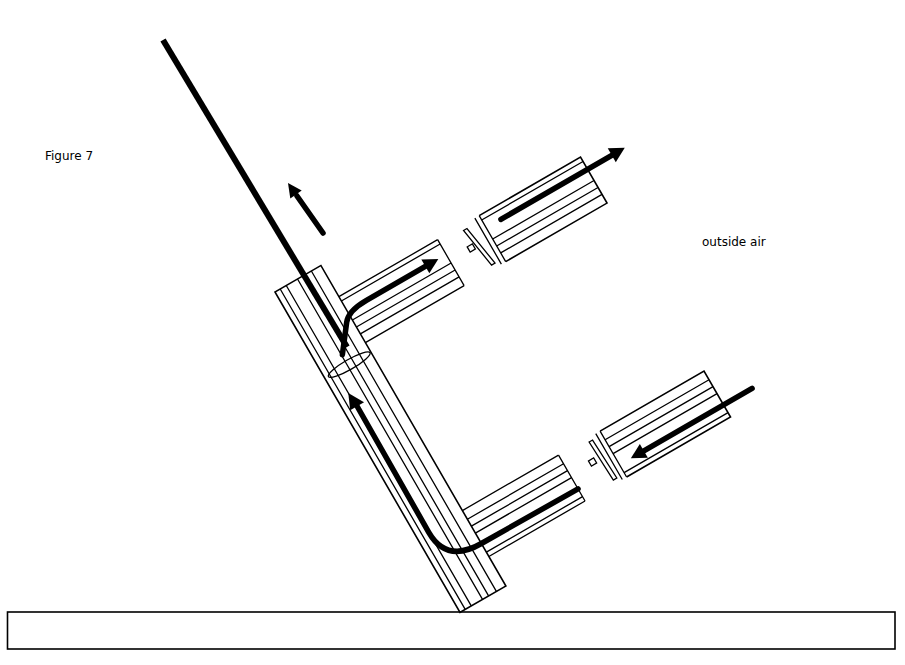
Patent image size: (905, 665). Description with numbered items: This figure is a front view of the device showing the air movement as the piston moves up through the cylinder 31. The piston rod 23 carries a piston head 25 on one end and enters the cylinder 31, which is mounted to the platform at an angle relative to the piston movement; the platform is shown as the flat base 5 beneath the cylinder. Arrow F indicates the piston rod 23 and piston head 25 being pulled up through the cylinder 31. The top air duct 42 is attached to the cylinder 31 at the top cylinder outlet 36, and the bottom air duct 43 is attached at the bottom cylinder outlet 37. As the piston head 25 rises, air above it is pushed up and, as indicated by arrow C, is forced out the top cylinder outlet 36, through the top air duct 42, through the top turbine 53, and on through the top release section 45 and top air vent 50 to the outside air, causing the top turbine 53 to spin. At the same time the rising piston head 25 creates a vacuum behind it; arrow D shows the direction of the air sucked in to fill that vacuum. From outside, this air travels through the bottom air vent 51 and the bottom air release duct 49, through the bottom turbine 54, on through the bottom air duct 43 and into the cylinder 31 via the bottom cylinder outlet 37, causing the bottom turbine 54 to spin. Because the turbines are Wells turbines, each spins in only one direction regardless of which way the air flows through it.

The floor / base 5 is at (307, 620).
The piston rod 23 is at (300, 267).
The piston head 25 is at (347, 365).
The cylinder 31 is at (295, 328).
The top cylinder outlet 36 is at (340, 290).
The bottom cylinder outlet 37 is at (467, 503).
The top air duct 42 is at (390, 263).
The bottom air duct 43 is at (532, 467).
The outlet duct section 45 is at (545, 175).
The bottom air release duct 49 is at (685, 382).
The top air vent 50 is at (603, 190).
The bottom air vent 51 is at (717, 385).
The top turbine 53 is at (450, 247).
The bottom turbine 54 is at (583, 450).
The arrow C is at (553, 193).
The arrow D is at (650, 463).
The arrow F is at (313, 210).